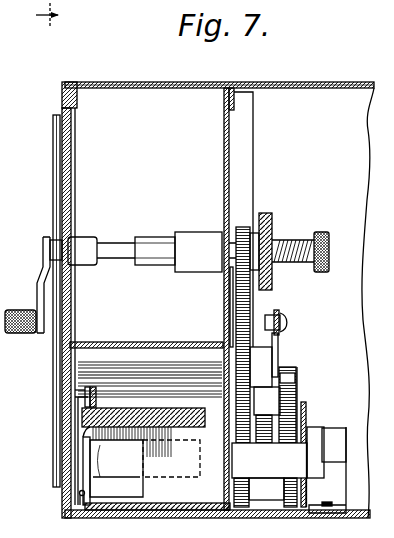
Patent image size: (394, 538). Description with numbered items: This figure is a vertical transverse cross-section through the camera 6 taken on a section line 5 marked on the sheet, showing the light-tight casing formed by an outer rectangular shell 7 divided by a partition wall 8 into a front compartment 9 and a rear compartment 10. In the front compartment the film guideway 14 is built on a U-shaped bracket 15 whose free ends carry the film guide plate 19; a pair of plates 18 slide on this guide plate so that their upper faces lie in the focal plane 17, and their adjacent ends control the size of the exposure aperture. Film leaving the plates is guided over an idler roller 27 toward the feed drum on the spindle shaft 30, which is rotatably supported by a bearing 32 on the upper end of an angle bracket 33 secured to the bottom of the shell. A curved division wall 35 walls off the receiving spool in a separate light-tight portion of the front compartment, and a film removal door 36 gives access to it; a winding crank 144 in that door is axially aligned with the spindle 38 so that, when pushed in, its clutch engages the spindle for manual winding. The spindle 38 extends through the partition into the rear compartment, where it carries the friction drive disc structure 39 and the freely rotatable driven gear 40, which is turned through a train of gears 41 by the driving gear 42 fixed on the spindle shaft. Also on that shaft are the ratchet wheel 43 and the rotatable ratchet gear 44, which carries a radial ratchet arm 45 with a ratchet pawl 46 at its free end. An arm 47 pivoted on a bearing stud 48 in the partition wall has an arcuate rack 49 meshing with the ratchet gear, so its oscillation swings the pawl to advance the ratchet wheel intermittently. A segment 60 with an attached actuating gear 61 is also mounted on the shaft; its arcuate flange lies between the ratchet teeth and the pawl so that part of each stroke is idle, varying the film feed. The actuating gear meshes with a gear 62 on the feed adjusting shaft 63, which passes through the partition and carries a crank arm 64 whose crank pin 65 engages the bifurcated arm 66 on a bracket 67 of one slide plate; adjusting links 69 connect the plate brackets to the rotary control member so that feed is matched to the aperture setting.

The section line indicator 5 is at (36, 15).
The camera 6 is at (328, 84).
The outer rectangular shell 7 is at (167, 82).
The partition wall 8 is at (222, 170).
The front compartment 9 is at (122, 108).
The rear compartment 10 is at (286, 108).
The film guideway 14 is at (79, 416).
The U-shaped bracket 15 is at (168, 505).
The focal plane 17 is at (140, 402).
The plates 18 is at (164, 408).
The film guide plate 19 is at (165, 445).
The idler roller 27 is at (118, 403).
The shaft 30 is at (171, 458).
The bearing 32 is at (331, 437).
The angle bracket 33 is at (349, 470).
The curved division wall 35 is at (160, 343).
The film removal door 36 is at (60, 201).
The spindle 38 is at (205, 240).
The friction drive disc structure 39 is at (273, 222).
The driven gear 40 is at (243, 227).
The train of gears 41 is at (240, 312).
The driving gear 42 is at (242, 507).
The ratchet wheel 43 is at (292, 507).
The ratchet gear 44 is at (266, 444).
The ratchet arm 45 is at (292, 377).
The ratchet pawl 46 is at (300, 373).
The arm 47 is at (279, 344).
The bearing stud 48 is at (250, 363).
The arcuate rack 49 is at (272, 411).
The segment 60 is at (296, 390).
The actuating gear 61 is at (305, 410).
The gear 62 is at (307, 490).
The feed adjusting shaft 63 is at (273, 477).
The crank arm 64 is at (112, 470).
The crank pin 65 is at (82, 497).
The arm 66 is at (83, 438).
The bracket 67 is at (93, 388).
The adjusting links 69 is at (85, 390).
The winding crank 144 is at (30, 334).